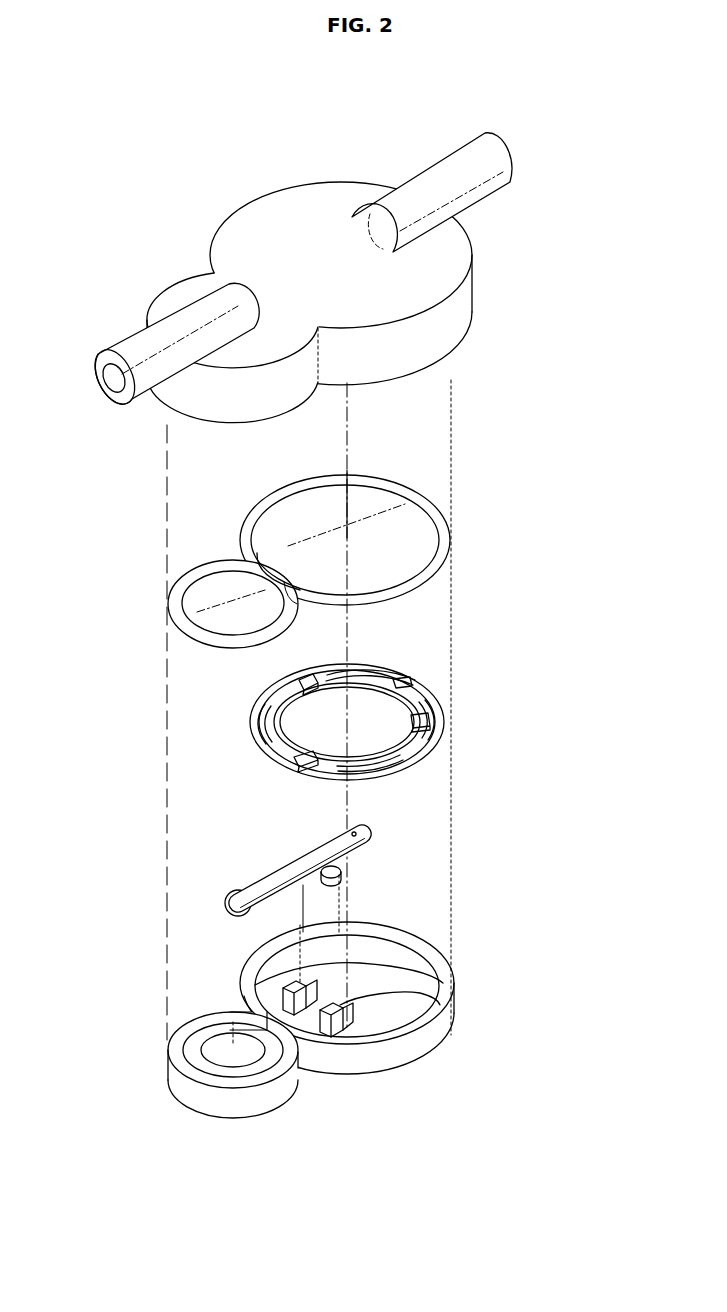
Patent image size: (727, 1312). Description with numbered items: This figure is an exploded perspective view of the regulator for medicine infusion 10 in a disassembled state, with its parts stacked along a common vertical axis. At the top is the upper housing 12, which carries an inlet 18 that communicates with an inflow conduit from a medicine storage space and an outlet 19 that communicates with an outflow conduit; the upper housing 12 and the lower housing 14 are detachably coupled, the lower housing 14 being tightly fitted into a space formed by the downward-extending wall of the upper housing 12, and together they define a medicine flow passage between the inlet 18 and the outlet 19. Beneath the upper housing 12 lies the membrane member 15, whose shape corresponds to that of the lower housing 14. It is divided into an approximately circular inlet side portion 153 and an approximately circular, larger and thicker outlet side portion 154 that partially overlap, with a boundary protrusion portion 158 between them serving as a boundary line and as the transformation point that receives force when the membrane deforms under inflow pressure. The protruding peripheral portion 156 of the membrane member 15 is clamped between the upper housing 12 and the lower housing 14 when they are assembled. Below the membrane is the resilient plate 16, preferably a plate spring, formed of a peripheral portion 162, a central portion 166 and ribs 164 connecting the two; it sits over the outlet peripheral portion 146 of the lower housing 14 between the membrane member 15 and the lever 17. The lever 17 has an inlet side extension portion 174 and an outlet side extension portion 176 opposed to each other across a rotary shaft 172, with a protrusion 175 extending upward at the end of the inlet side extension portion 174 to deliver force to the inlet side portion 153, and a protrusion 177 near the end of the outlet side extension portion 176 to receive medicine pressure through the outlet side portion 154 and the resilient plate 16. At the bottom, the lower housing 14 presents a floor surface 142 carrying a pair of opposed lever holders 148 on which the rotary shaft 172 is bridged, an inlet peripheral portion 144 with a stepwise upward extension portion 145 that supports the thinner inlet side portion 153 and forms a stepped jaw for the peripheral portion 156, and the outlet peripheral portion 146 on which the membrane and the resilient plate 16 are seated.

The regulator for medicine infusion 10 is at (326, 622).
The upper housing 12 is at (326, 273).
The inlet 18 is at (110, 380).
The outlet 19 is at (468, 187).
The membrane member 15 is at (366, 560).
The outlet side portion 154 is at (308, 524).
The inlet side portion 153 is at (210, 583).
The boundary protrusion portion 158 is at (270, 548).
The peripheral portion 156 is at (205, 640).
The resilient plate 16 is at (396, 721).
The peripheral portion 162 is at (258, 690).
The rib 164 is at (403, 686).
The central portion 166 is at (340, 695).
The lever 17 is at (402, 861).
The rotary shaft 172 is at (344, 876).
The inlet side extension portion 174 is at (258, 881).
The protrusion 175 is at (228, 896).
The outlet side extension portion 176 is at (323, 842).
The protrusion 177 is at (366, 834).
The lower housing 14 is at (388, 1044).
The floor surface 142 is at (387, 1022).
The inlet peripheral portion 144 is at (195, 1082).
The extension portion 145 is at (245, 1070).
The outlet peripheral portion 146 is at (437, 1012).
The lever holders 148 is at (360, 1013).